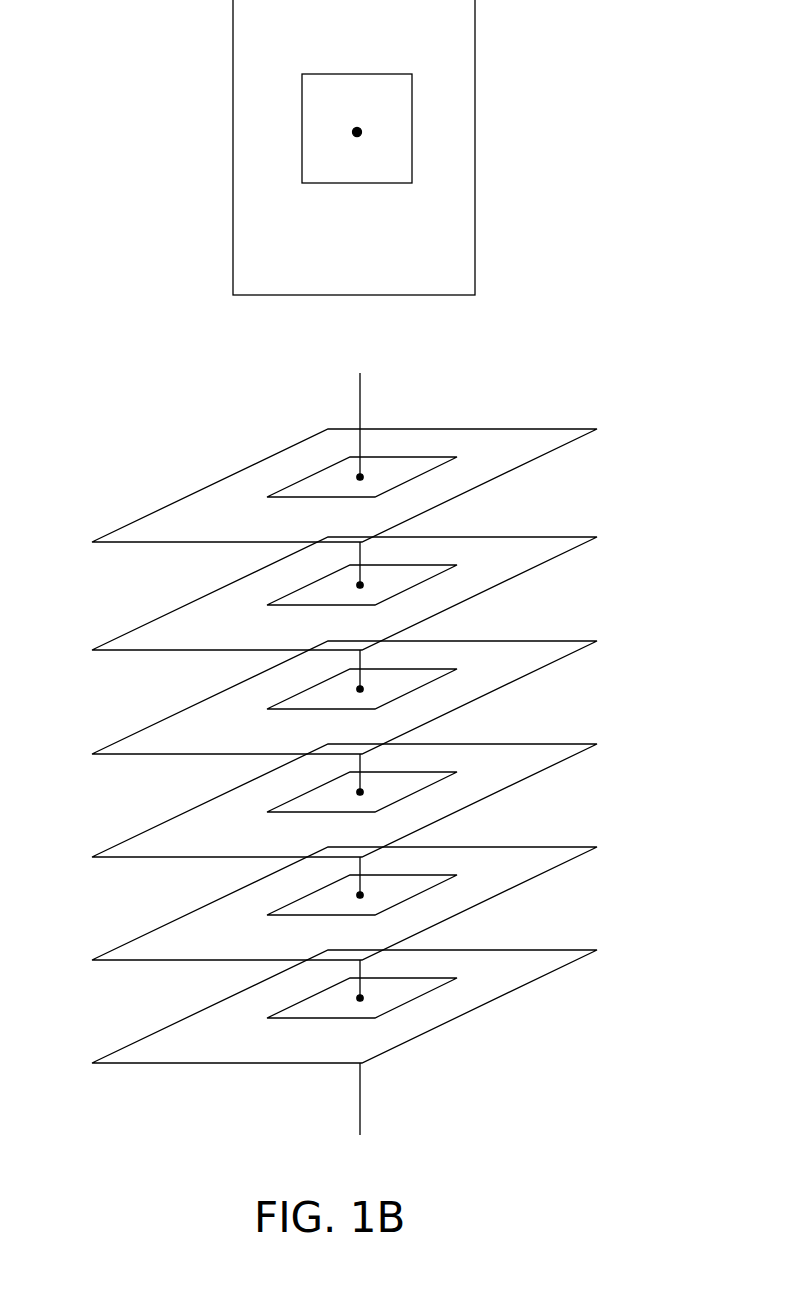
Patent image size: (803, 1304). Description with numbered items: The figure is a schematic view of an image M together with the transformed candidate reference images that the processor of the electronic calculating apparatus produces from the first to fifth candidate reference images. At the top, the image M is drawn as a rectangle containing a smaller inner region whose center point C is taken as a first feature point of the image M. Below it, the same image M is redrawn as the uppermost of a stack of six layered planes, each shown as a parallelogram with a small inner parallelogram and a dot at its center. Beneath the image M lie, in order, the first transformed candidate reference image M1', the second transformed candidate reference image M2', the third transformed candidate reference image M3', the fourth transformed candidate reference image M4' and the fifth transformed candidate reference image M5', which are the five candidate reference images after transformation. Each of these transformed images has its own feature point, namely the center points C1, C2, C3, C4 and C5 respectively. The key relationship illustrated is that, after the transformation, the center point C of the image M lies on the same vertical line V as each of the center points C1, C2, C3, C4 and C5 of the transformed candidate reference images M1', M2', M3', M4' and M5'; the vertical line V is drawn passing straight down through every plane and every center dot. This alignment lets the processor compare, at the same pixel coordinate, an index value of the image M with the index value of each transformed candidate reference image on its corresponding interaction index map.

The center point C is at (352, 132).
The image M is at (476, 134).
The vertical line V is at (362, 403).
The center point C1 is at (358, 585).
The center point C2 is at (358, 689).
The center point C3 is at (358, 792).
The center point C4 is at (358, 895).
The center point C5 is at (358, 998).
The first transformed candidate reference image M1' is at (382, 588).
The second transformed candidate reference image M2' is at (382, 692).
The third transformed candidate reference image M3' is at (382, 795).
The fourth transformed candidate reference image M4' is at (382, 898).
The fifth transformed candidate reference image M5' is at (382, 1001).